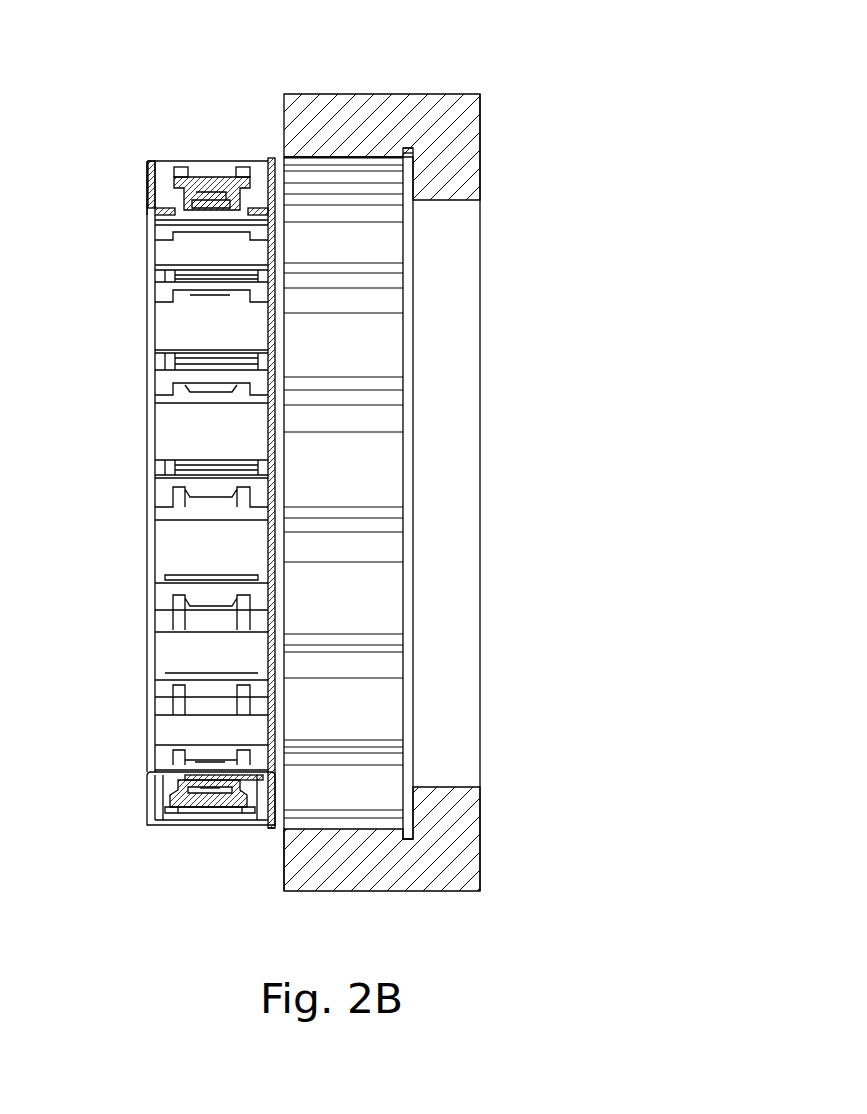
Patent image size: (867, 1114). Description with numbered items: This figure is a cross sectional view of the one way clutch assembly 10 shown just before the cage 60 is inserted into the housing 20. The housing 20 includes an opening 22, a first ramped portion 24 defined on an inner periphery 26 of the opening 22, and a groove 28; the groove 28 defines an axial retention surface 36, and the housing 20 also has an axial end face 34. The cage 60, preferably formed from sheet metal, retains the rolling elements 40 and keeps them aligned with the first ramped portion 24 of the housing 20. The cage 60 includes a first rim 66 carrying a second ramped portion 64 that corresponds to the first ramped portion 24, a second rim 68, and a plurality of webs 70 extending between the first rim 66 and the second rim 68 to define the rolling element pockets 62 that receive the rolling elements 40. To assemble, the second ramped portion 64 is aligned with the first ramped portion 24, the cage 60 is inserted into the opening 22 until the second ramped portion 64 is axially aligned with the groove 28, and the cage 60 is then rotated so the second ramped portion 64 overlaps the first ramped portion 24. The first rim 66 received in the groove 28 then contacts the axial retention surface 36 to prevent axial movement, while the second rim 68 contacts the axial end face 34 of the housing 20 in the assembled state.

The one way clutch assembly 10 is at (400, 479).
The housing 20 is at (350, 88).
The opening 22 is at (332, 830).
The first ramped portion 24 is at (336, 156).
The inner periphery 26 is at (380, 156).
The groove 28 is at (401, 841).
The axial end face 34 is at (281, 878).
The axial retention surface 36 is at (413, 150).
The rolling elements 40 is at (164, 178).
The cage 60 is at (164, 488).
The rolling element pockets 62 is at (157, 789).
The second ramped portion 64 is at (272, 158).
The first rim 66 is at (270, 832).
The second rim 68 is at (147, 810).
The webs 70 is at (197, 800).